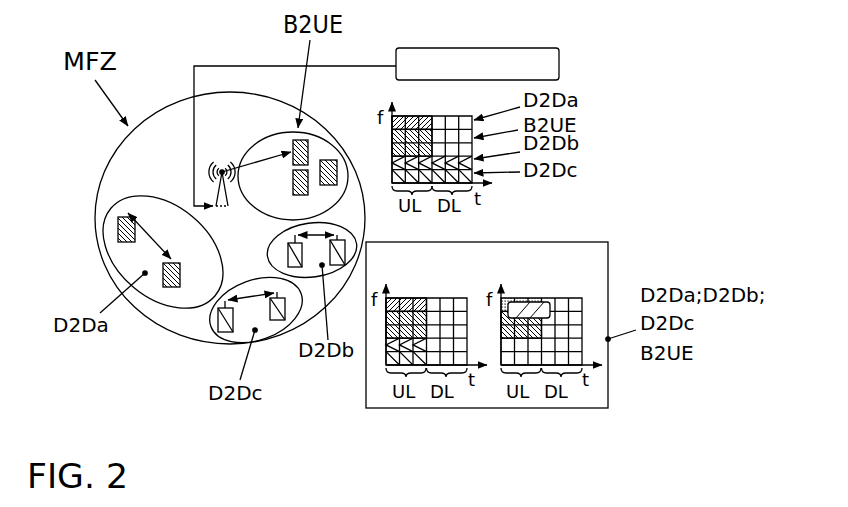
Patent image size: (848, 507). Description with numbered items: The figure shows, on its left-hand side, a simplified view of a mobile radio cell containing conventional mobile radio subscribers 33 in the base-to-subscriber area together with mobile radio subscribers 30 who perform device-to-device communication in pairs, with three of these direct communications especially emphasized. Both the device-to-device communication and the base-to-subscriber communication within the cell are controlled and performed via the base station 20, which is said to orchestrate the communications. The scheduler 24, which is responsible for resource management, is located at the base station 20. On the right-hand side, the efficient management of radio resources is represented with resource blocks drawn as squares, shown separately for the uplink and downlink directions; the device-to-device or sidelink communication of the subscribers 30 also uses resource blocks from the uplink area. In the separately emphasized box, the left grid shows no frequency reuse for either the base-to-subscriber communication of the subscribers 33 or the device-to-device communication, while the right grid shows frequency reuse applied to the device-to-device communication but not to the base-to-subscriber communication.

The base station 20 is at (226, 198).
The scheduler 24 is at (543, 54).
The subscriber station for D2D communication 30 is at (125, 232).
The subscriber station for other mobile communication 33 is at (306, 150).